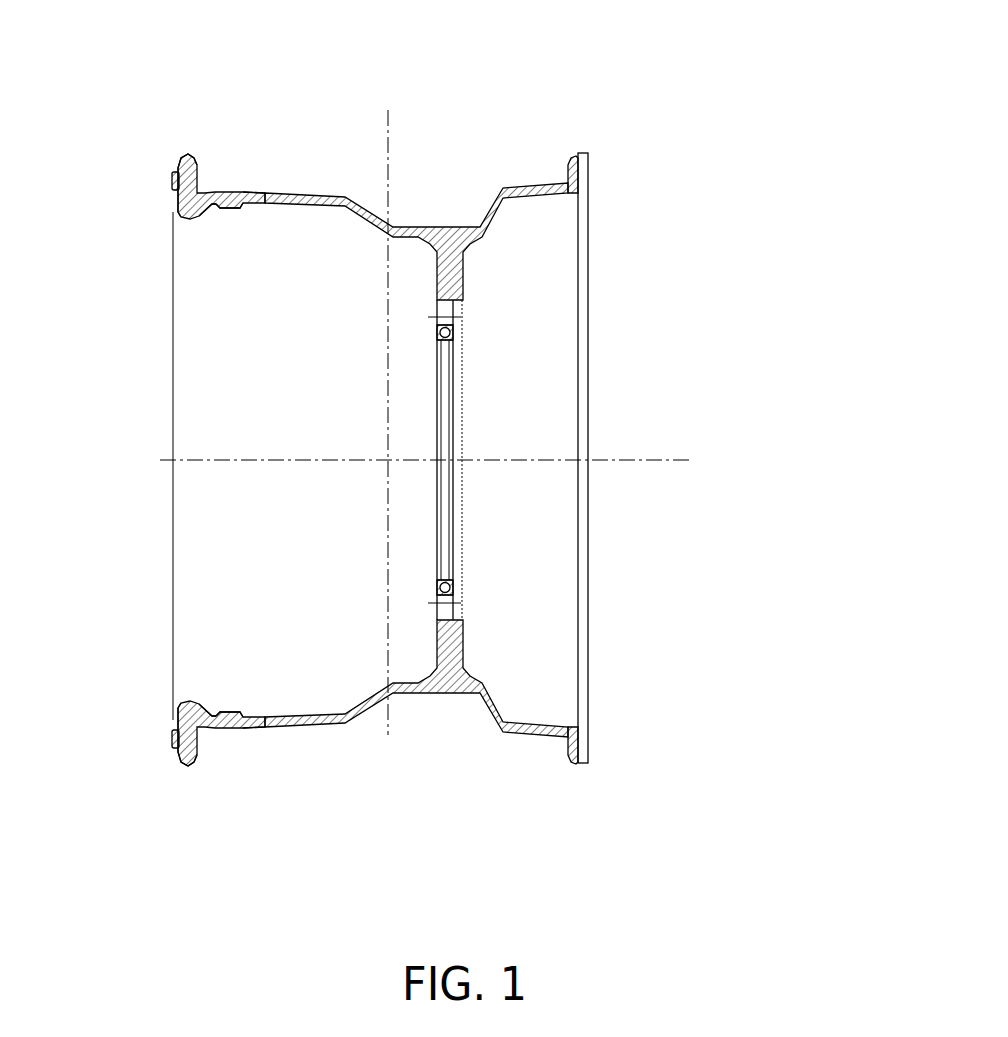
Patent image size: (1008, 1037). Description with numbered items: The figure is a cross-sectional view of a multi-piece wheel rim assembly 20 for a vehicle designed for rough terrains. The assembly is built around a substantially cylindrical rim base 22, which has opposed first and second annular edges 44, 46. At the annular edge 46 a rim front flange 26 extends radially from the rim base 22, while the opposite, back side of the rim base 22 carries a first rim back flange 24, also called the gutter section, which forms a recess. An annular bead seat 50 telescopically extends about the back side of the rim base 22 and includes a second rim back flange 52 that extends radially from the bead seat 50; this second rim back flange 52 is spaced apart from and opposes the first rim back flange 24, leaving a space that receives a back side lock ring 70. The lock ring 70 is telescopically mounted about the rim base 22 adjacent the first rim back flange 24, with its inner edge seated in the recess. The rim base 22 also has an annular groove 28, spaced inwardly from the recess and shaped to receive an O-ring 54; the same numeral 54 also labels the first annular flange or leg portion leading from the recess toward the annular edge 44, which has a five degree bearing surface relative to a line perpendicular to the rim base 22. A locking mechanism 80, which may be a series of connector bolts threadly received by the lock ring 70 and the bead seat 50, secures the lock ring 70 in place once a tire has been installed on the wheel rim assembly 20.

The multi-piece wheel rim assembly 20 is at (622, 158).
The rim base 22 is at (337, 728).
The first rim back flange 24 is at (192, 223).
The rim front flange 26 is at (567, 167).
The annular groove 28 is at (232, 212).
The first annular edge 44 is at (174, 200).
The second annular edge 46 is at (578, 151).
The annular bead seat 50 is at (218, 185).
The second rim back flange 52 is at (184, 153).
The O-ring 54 is at (233, 193).
The back side lock ring 70 is at (187, 220).
The locking mechanism 80 is at (172, 738).